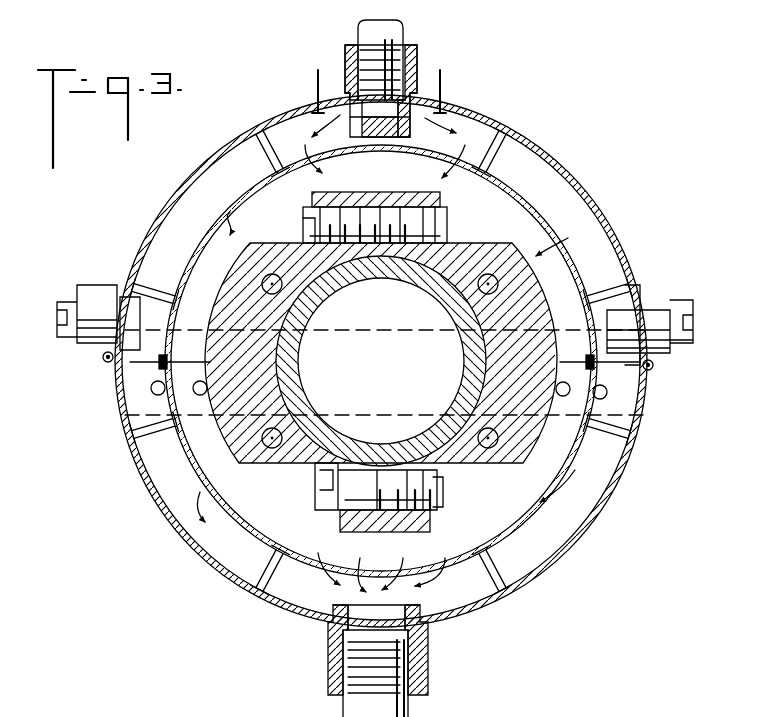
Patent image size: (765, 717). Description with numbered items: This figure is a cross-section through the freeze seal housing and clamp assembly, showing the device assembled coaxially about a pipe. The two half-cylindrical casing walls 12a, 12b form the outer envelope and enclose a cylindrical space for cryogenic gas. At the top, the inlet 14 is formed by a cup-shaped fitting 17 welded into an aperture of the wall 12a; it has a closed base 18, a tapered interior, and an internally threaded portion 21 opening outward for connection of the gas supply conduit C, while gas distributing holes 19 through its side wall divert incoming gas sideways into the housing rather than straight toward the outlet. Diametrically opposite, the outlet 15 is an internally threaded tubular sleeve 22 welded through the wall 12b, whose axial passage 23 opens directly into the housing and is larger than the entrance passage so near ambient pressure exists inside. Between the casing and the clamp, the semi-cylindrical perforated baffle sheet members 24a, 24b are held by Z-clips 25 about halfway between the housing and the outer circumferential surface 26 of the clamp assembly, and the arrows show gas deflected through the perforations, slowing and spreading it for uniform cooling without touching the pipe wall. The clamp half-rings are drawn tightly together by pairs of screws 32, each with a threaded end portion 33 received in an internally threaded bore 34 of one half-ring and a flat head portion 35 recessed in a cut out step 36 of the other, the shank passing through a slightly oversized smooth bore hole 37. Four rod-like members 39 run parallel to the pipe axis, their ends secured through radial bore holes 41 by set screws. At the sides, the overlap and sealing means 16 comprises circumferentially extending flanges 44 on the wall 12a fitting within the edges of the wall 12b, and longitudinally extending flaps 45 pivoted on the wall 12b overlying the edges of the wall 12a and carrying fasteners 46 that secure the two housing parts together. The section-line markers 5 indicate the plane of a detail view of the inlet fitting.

The outer semi-cylindrical casing wall 12a is at (572, 185).
The outer semi-cylindrical casing wall 12b is at (598, 500).
The inlet 14 is at (335, 55).
The outlet 15 is at (322, 628).
The overlap and sealing means 16 is at (100, 372).
The cup-shaped fitting 17 is at (418, 62).
The closed base 18 is at (375, 137).
The gas distributing holes 19 is at (392, 140).
The internally threaded portion 21 is at (358, 30).
The internally threaded tubular sleeve 22 is at (328, 680).
The axial passage 23 is at (412, 650).
The perforated baffle sheet member 24a is at (548, 227).
The perforated baffle sheet member 24b is at (562, 530).
The Z-clips 25 is at (250, 560).
The outer circumferential surface of pipe clamp assembly 26 is at (518, 252).
The screws 32 is at (360, 340).
The threaded end portion 33 is at (322, 248).
The internally threaded bore 34 is at (312, 196).
The flat head portion 35 is at (455, 250).
The cut out step 36 is at (455, 218).
The bore hole 37 is at (418, 186).
The rod-like members 39 is at (268, 295).
The bore holes 41 is at (240, 276).
The circumferentially extending flanges 44 is at (128, 440).
The longitudinally extending flaps 45 is at (120, 290).
The fasteners 46 is at (95, 285).
The gas supply conduit C is at (400, 26).
The section line 5 is at (378, 81).